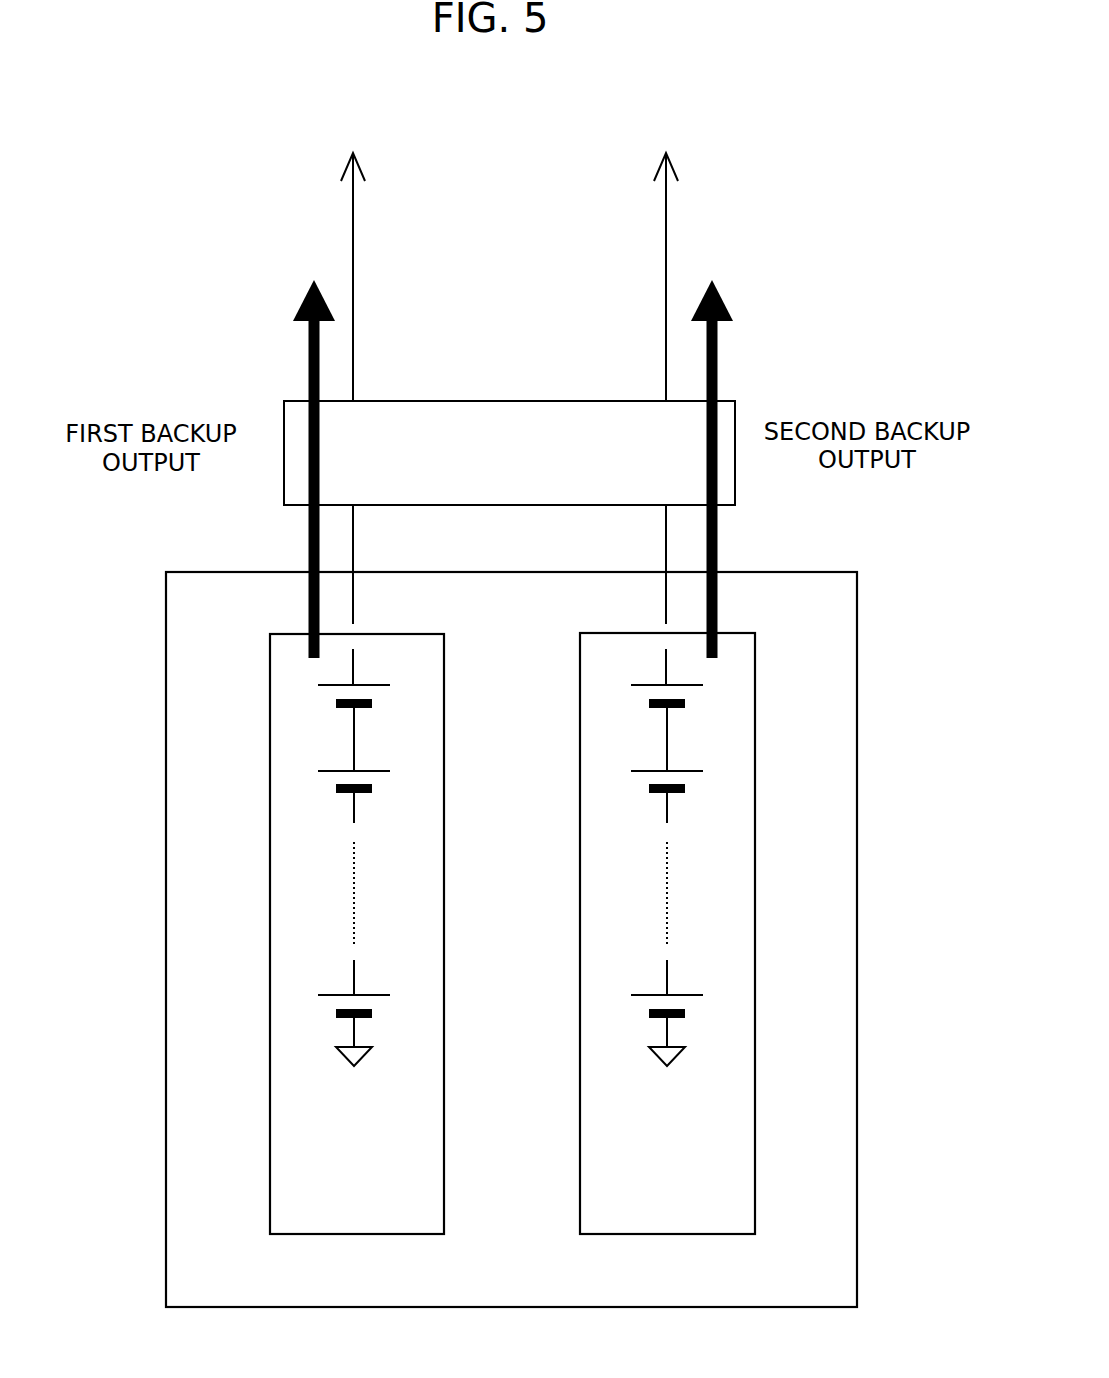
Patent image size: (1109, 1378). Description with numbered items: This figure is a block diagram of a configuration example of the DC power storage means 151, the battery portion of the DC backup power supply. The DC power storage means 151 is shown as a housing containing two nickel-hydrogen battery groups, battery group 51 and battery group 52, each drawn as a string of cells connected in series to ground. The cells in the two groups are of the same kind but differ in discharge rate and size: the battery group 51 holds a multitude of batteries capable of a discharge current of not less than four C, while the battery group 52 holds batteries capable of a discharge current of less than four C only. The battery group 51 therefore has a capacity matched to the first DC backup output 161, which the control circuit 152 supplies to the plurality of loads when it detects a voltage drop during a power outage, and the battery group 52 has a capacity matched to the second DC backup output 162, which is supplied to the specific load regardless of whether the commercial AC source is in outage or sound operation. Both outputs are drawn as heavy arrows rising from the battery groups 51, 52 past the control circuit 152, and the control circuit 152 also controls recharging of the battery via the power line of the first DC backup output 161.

The NiMH battery group 51 is at (444, 892).
The NiMH battery group 52 is at (755, 888).
The DC power storage means 151 is at (788, 572).
The control circuit 152 is at (466, 401).
The first DC backup output 161 is at (353, 250).
The second DC backup output 162 is at (666, 248).